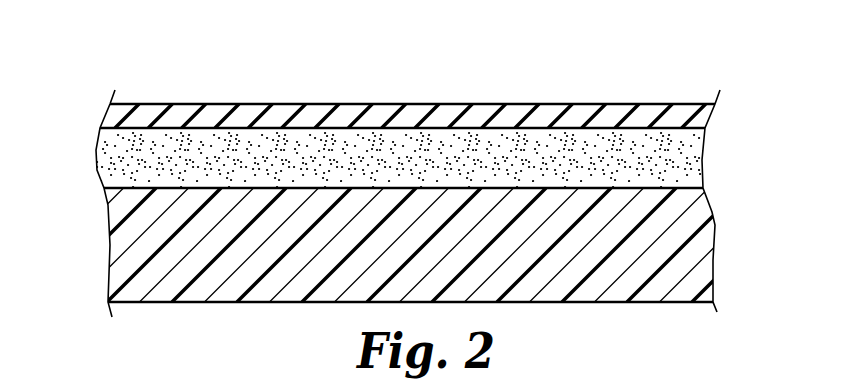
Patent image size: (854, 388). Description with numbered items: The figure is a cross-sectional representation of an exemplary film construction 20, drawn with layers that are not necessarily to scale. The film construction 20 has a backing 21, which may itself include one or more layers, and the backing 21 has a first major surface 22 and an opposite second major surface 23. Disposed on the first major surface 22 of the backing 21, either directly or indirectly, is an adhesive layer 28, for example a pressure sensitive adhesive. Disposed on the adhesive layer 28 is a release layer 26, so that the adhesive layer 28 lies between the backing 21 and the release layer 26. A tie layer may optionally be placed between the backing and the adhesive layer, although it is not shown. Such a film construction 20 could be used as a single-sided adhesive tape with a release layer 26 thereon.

The film construction 20 is at (163, 78).
The backing 21 is at (120, 245).
The first major surface 22 is at (700, 178).
The second major surface 23 is at (678, 305).
The release layer 26 is at (118, 120).
The adhesive layer 28 is at (103, 160).